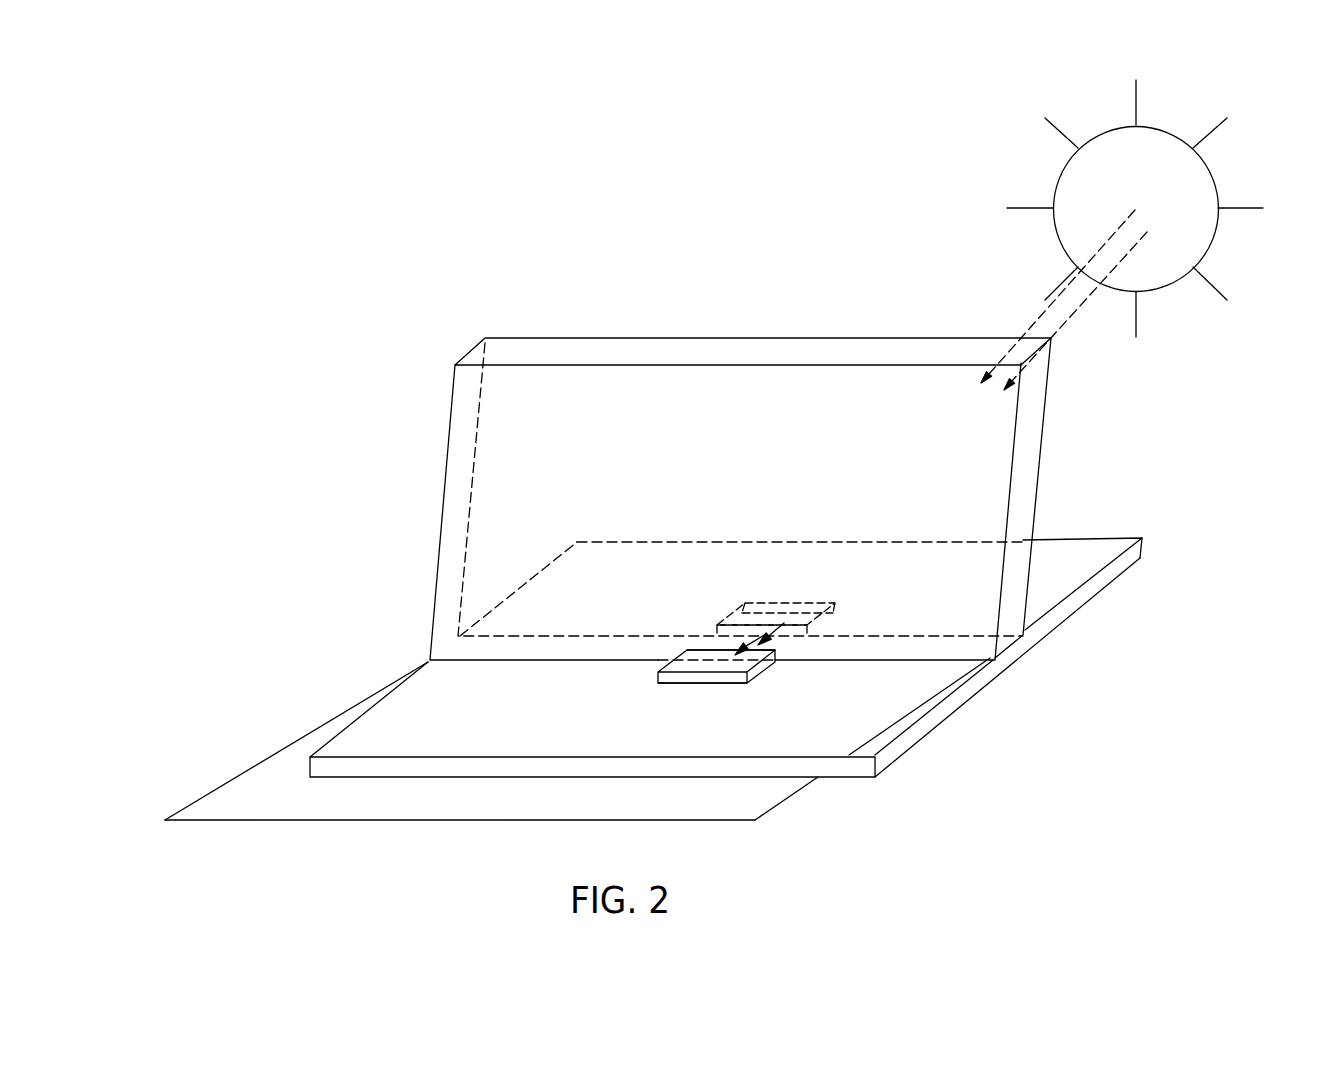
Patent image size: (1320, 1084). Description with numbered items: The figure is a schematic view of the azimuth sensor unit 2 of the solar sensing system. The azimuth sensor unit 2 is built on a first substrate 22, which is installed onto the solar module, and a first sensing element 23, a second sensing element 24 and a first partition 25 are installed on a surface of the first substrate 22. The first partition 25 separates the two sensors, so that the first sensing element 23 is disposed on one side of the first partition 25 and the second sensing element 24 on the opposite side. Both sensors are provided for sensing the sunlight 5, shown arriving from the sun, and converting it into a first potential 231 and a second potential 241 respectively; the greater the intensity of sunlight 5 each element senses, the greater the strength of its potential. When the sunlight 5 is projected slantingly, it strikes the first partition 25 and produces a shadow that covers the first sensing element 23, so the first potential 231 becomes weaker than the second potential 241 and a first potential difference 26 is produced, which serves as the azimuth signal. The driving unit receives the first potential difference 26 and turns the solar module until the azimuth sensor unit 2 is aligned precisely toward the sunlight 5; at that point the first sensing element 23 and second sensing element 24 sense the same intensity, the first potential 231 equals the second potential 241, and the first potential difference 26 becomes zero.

The azimuth sensor unit 2 is at (268, 282).
The sunlight 5 is at (1085, 172).
The first substrate 22 is at (923, 578).
The first sensing element 23 is at (747, 681).
The first potential 231 is at (703, 684).
The second sensing element 24 is at (742, 603).
The second potential 241 is at (794, 604).
The first partition 25 is at (530, 353).
The first potential difference 26 is at (740, 651).